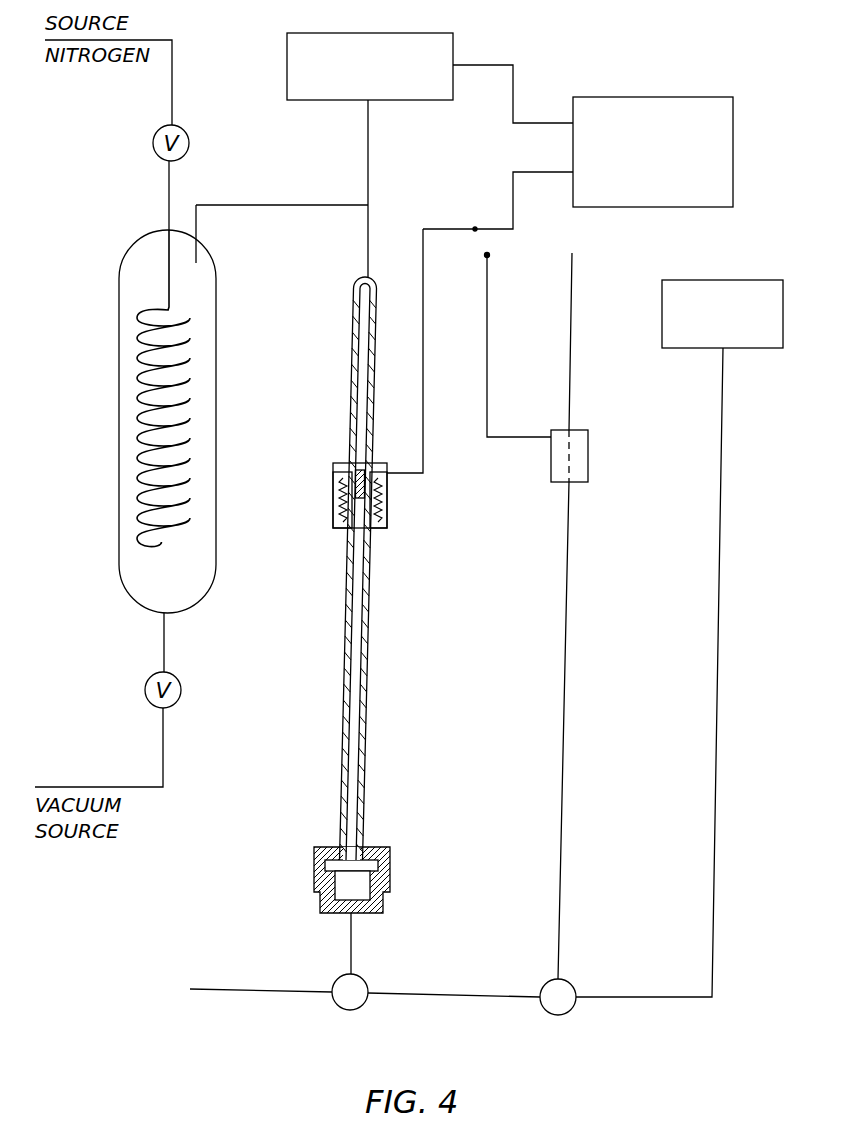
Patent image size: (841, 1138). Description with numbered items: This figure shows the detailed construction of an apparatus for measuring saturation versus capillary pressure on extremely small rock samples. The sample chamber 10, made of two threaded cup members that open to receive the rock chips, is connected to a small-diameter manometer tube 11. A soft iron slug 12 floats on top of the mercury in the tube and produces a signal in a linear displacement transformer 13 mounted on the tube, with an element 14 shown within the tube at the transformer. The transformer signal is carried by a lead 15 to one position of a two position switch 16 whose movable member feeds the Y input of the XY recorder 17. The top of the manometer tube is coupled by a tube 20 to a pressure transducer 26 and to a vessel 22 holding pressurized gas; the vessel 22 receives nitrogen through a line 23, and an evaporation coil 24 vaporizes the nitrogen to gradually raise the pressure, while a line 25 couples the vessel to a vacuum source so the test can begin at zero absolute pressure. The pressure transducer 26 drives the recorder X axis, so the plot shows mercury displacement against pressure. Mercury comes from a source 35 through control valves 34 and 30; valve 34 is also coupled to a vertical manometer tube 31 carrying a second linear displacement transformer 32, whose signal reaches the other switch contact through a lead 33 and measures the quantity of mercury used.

The sample chamber 10 is at (393, 862).
The manometer tube 11 is at (370, 634).
The soft iron slug 12 is at (372, 511).
The linear displacement transformer 13 is at (388, 528).
The sample plug 14 is at (343, 448).
The lead 15 is at (423, 302).
The two position switch 16 is at (493, 228).
The XY recorder 17 is at (735, 152).
The tube 20 is at (366, 243).
The vessel 22 is at (217, 381).
The line 23 is at (168, 193).
The evaporation coil 24 is at (140, 400).
The line 25 is at (165, 644).
The pressure transducer 26 is at (424, 100).
The control valve 30 is at (338, 1006).
The vertical manometer tube 31 is at (563, 766).
The linear displacement transformer 32 is at (590, 456).
The lead 33 is at (487, 308).
The control valve 34 is at (571, 1011).
The mercury source 35 is at (753, 280).